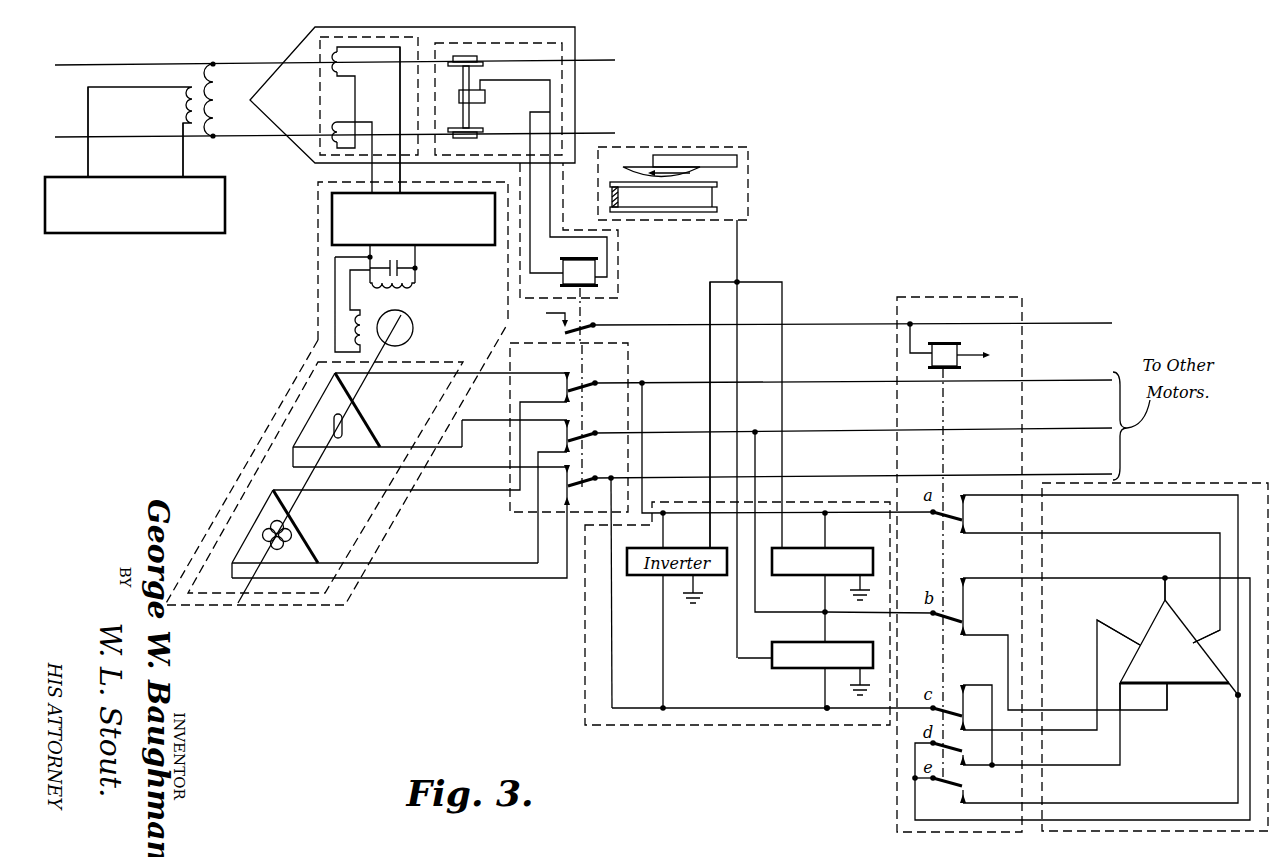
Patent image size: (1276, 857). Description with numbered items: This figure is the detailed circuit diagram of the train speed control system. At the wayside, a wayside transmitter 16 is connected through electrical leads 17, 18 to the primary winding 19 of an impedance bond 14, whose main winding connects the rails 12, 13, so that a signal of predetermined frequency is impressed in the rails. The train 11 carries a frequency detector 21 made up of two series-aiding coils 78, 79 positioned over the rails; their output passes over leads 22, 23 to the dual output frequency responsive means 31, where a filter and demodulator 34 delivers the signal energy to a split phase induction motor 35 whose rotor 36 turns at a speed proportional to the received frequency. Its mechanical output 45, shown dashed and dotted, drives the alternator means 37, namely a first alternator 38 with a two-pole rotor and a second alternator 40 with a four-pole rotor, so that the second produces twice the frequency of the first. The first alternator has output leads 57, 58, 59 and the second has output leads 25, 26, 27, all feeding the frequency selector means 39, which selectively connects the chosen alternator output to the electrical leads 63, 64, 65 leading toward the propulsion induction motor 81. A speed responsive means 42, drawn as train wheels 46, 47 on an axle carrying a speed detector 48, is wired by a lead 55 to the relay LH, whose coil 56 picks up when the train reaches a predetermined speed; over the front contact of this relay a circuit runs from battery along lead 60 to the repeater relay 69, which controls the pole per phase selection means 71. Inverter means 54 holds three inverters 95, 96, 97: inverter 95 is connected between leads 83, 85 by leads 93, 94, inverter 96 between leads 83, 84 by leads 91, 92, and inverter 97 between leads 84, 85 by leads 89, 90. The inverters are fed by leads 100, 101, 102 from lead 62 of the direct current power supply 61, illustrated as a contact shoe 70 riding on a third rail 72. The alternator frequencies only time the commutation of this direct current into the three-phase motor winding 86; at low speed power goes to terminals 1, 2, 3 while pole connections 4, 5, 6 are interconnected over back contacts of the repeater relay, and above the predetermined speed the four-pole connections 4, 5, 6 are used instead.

The train 11 is at (578, 32).
The rail 12 is at (618, 60).
The rail 13 is at (604, 131).
The impedance bond 14 is at (225, 99).
The wayside transmitter 16 is at (212, 176).
The electrical lead 17 is at (181, 165).
The electrical lead 18 is at (90, 168).
The primary winding 19 is at (188, 103).
The frequency detector 21 is at (315, 44).
The electrical lead 22 is at (318, 178).
The electrical lead 23 is at (403, 177).
The output lead 25 is at (457, 492).
The output lead 26 is at (462, 562).
The output lead 27 is at (465, 578).
The dual output frequency responsive means 31 is at (318, 212).
The filter and demodulator 34 is at (332, 240).
The split phase induction motor 35 is at (414, 305).
The rotor 36 is at (414, 324).
The alternator means 37 is at (300, 384).
The first alternator 38 is at (362, 414).
The frequency selector means 39 is at (545, 345).
The second alternator 40 is at (303, 526).
The speed responsive means 42 is at (578, 82).
The mechanical output 45 is at (405, 346).
The train wheel 46 is at (481, 58).
The train wheel 47 is at (480, 137).
The speed detector 48 is at (487, 97).
The inverter means 54 is at (580, 612).
The generator lead 55 is at (534, 194).
The relay LH coil 56 is at (600, 272).
The output lead 57 is at (452, 387).
The output lead 58 is at (516, 436).
The output lead 59 is at (494, 467).
The lead 60 is at (852, 313).
The direct current power supply 61 is at (750, 152).
The electrical lead 62 is at (739, 250).
The electrical lead 63 is at (673, 383).
The electrical lead 64 is at (682, 432).
The electrical lead 65 is at (690, 478).
The repeater relay 69 is at (930, 358).
The direct current supply power contact shoe 70 is at (700, 172).
The pole per phase selection means 71 is at (1026, 298).
The pendulum track 72 is at (702, 212).
The detector coil 78 is at (330, 72).
The detector coil 79 is at (349, 145).
The propulsion induction motor 81 is at (1178, 482).
The electrical lead 83 is at (648, 450).
The electrical lead 84 is at (758, 450).
The electrical lead 85 is at (586, 604).
The motor winding 86 is at (1150, 666).
The electrical lead 89 is at (822, 631).
The electrical lead 90 is at (823, 690).
The electrical lead 91 is at (829, 529).
The electrical lead 92 is at (839, 608).
The electrical lead 93 is at (666, 526).
The electrical lead 94 is at (666, 651).
The inverter 95 is at (614, 595).
The inverter 96 is at (809, 530).
The inverter 97 is at (802, 671).
The electrical lead 100 is at (708, 303).
The electrical lead 101 is at (753, 470).
The electrical lead 102 is at (784, 290).
The winding terminal 1 is at (1206, 644).
The winding terminal 2 is at (1176, 696).
The winding terminal 3 is at (1118, 631).
The pole connection 4 is at (1176, 592).
The pole connection 5 is at (1129, 696).
The pole connection 6 is at (1230, 679).